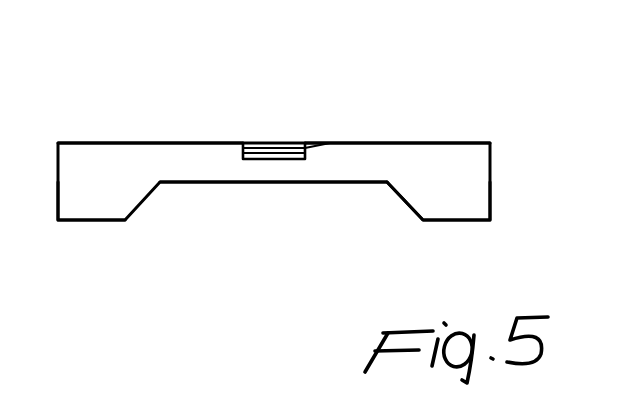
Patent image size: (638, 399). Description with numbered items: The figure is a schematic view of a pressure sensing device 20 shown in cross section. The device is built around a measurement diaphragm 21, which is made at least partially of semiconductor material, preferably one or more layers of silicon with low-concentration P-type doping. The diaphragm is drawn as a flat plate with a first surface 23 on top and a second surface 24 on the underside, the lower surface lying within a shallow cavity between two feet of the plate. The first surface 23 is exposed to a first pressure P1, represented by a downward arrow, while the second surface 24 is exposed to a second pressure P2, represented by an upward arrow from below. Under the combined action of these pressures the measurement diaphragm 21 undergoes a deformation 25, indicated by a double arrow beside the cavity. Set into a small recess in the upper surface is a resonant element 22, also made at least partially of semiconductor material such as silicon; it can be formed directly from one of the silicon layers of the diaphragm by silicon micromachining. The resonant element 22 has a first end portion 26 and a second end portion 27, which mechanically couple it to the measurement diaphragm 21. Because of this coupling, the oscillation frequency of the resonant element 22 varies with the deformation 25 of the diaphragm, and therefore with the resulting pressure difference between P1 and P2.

The pressure sensing device 20 is at (487, 106).
The measurement diaphragm 21 is at (84, 230).
The resonant element 22 is at (302, 118).
The first surface 23 is at (166, 130).
The second surface 24 is at (208, 192).
The deformation 25 is at (353, 207).
The first end portion 26 is at (241, 143).
The second end portion 27 is at (310, 146).
The first pressure P1 is at (274, 112).
The second pressure P2 is at (273, 195).